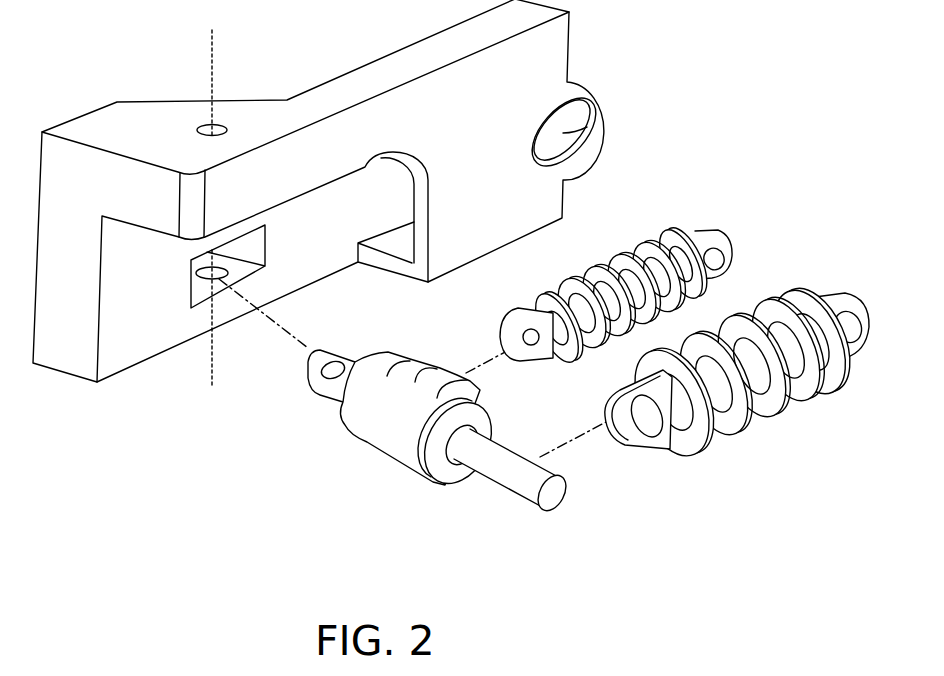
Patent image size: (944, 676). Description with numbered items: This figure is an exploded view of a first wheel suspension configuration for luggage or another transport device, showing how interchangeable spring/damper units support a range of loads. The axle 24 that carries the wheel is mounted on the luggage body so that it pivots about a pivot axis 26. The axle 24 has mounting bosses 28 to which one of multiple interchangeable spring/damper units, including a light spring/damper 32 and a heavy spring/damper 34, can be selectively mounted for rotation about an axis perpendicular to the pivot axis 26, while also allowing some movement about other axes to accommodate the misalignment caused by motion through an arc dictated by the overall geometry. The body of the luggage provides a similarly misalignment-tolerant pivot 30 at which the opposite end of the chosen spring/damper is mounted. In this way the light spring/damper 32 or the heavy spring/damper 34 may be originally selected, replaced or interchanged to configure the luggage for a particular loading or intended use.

The axle 24 is at (504, 485).
The pivot axis 26 is at (212, 47).
The mounting bosses 28 is at (467, 380).
The pivot 30 is at (588, 126).
The light spring/damper 32 is at (683, 229).
The heavy spring/damper 34 is at (803, 292).